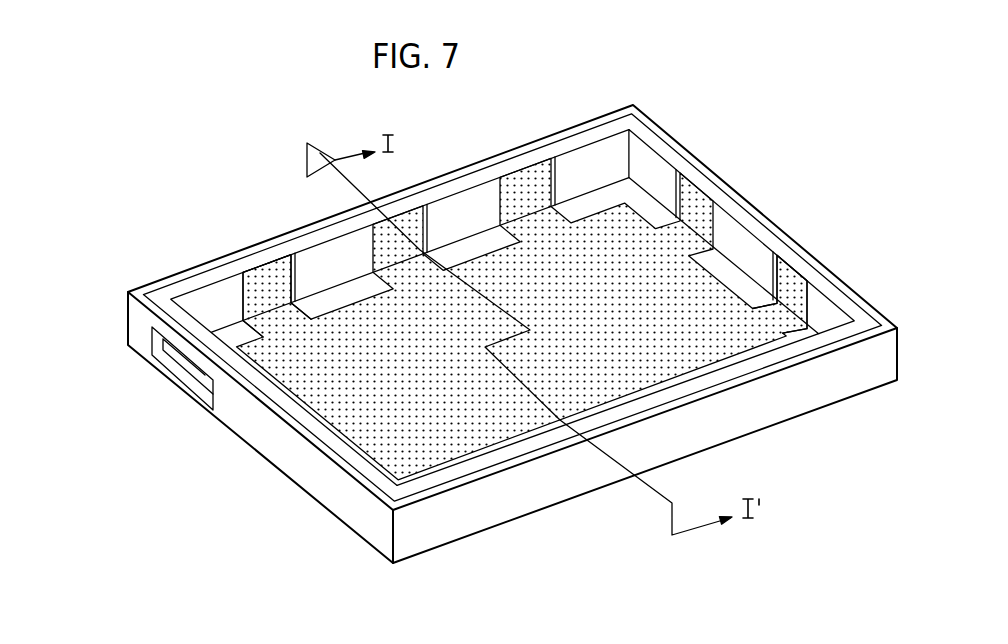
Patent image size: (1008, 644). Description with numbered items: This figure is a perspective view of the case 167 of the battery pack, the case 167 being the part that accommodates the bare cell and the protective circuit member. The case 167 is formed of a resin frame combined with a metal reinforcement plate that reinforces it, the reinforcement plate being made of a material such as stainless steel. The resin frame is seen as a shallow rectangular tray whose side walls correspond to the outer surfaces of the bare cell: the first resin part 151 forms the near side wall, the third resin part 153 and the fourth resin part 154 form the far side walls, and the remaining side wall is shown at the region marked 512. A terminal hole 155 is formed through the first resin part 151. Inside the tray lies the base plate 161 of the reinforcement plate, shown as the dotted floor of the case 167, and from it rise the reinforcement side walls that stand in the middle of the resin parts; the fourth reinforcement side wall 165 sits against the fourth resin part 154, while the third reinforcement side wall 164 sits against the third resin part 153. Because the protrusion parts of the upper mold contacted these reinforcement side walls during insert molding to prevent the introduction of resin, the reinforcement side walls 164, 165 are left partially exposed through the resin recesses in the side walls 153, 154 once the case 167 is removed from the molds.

The case 167 is at (108, 263).
The first resin part 151 is at (300, 465).
The side wall 512 is at (755, 412).
The terminal hole 155 is at (187, 360).
The fourth resin part 154 is at (492, 157).
The third resin part 153 is at (727, 190).
The base plate 161 is at (457, 427).
The fourth reinforcement side wall 165 is at (270, 278).
The third reinforcement side wall 164 is at (790, 282).